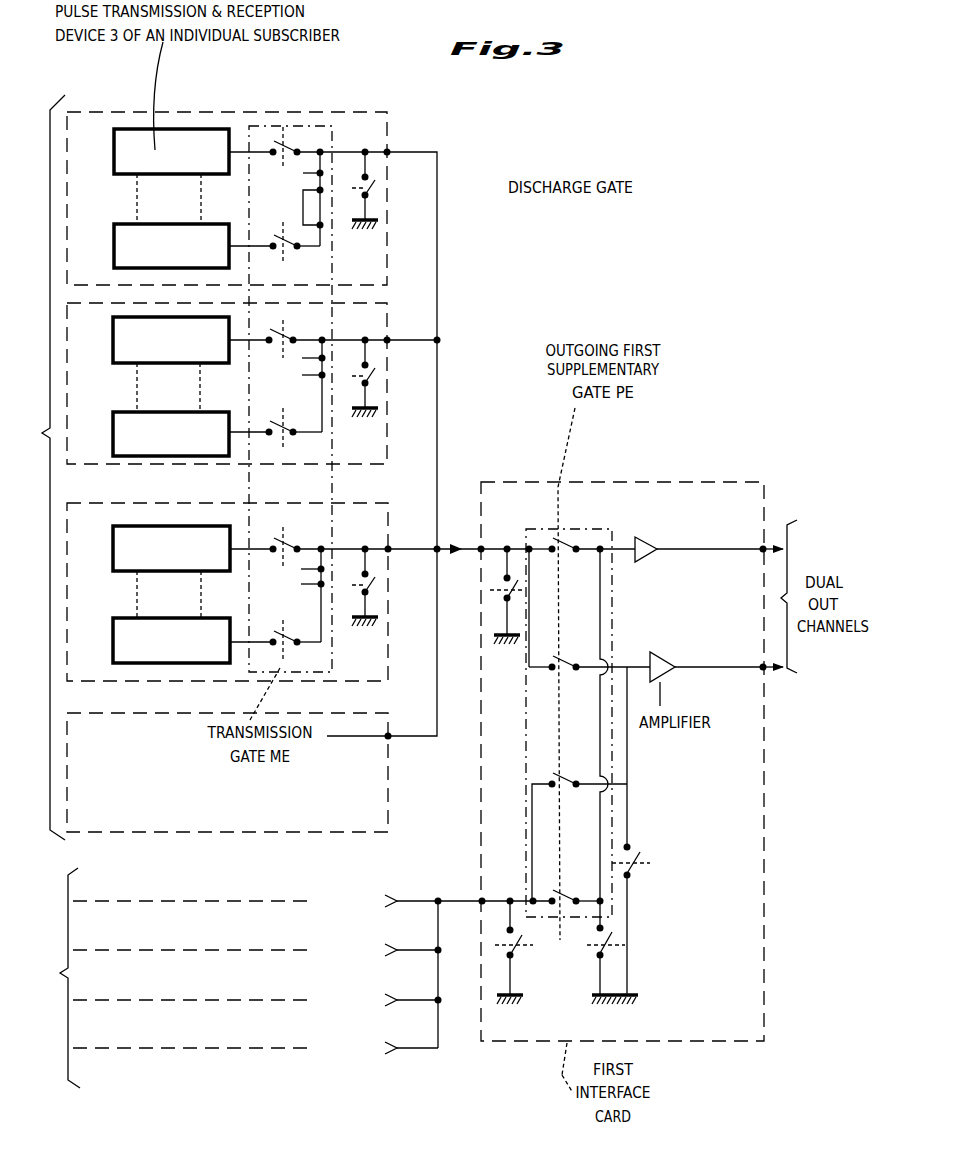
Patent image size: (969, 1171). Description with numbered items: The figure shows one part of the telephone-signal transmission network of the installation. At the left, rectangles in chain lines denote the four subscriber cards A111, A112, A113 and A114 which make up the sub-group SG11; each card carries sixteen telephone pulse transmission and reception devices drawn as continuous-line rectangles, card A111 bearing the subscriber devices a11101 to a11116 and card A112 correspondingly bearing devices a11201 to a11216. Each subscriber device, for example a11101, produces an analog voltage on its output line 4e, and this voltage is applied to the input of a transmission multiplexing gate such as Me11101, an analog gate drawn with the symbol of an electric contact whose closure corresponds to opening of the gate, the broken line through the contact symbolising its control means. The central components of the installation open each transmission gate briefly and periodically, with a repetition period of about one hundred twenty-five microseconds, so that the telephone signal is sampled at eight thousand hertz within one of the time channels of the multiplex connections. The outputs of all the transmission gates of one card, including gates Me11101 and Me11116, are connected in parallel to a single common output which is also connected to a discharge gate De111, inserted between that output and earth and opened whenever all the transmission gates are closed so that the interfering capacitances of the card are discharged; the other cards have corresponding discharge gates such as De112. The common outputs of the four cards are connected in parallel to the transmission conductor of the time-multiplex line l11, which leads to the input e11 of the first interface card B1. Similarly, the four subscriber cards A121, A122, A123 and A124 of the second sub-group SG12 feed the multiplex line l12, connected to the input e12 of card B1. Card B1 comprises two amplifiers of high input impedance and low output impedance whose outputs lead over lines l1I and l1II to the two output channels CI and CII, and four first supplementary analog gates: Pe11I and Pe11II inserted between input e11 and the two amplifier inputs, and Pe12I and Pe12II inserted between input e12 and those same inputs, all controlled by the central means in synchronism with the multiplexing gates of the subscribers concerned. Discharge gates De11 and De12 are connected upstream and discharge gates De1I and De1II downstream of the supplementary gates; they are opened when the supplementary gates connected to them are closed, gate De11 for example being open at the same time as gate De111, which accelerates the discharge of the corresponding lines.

The sub-group SG11 is at (35, 467).
The sub-group SG12 is at (46, 978).
The subscriber card A111 is at (90, 112).
The subscriber device a11101 is at (183, 125).
The subscriber device a11116 is at (163, 232).
The output line 4e is at (251, 148).
The transmission multiplexing gate Me11101 is at (286, 145).
The transmission multiplexing gate Me11116 is at (300, 243).
The discharge gate De111 is at (369, 190).
The subscriber card A112 is at (67, 340).
The subscriber device a11201 is at (128, 318).
The subscriber device a11216 is at (122, 418).
The discharge gate De112 is at (373, 372).
The subscriber card A113 is at (122, 527).
The subscriber card A114 is at (103, 730).
The time-multiplex line l11 is at (462, 549).
The input e11 is at (482, 549).
The discharge gate De11 is at (500, 593).
The first interface card B1 is at (573, 482).
The first supplementary analog gate Pe11I is at (566, 541).
The first supplementary analog gate Pe11II is at (558, 656).
The first supplementary analog gate Pe12I is at (567, 896).
The first supplementary analog gate Pe12II is at (556, 773).
The output line l1I is at (763, 552).
The output line l1II is at (763, 670).
The output channel CI is at (775, 538).
The output channel CII is at (779, 657).
The discharge gate De1I is at (616, 948).
The discharge gate De1II is at (636, 866).
The multiplex line l12 is at (456, 900).
The input e12 is at (483, 900).
The discharge gate De12 is at (510, 948).
The subscriber card A121 is at (257, 901).
The subscriber card A122 is at (257, 950).
The subscriber card A123 is at (257, 1000).
The subscriber card A124 is at (255, 1048).